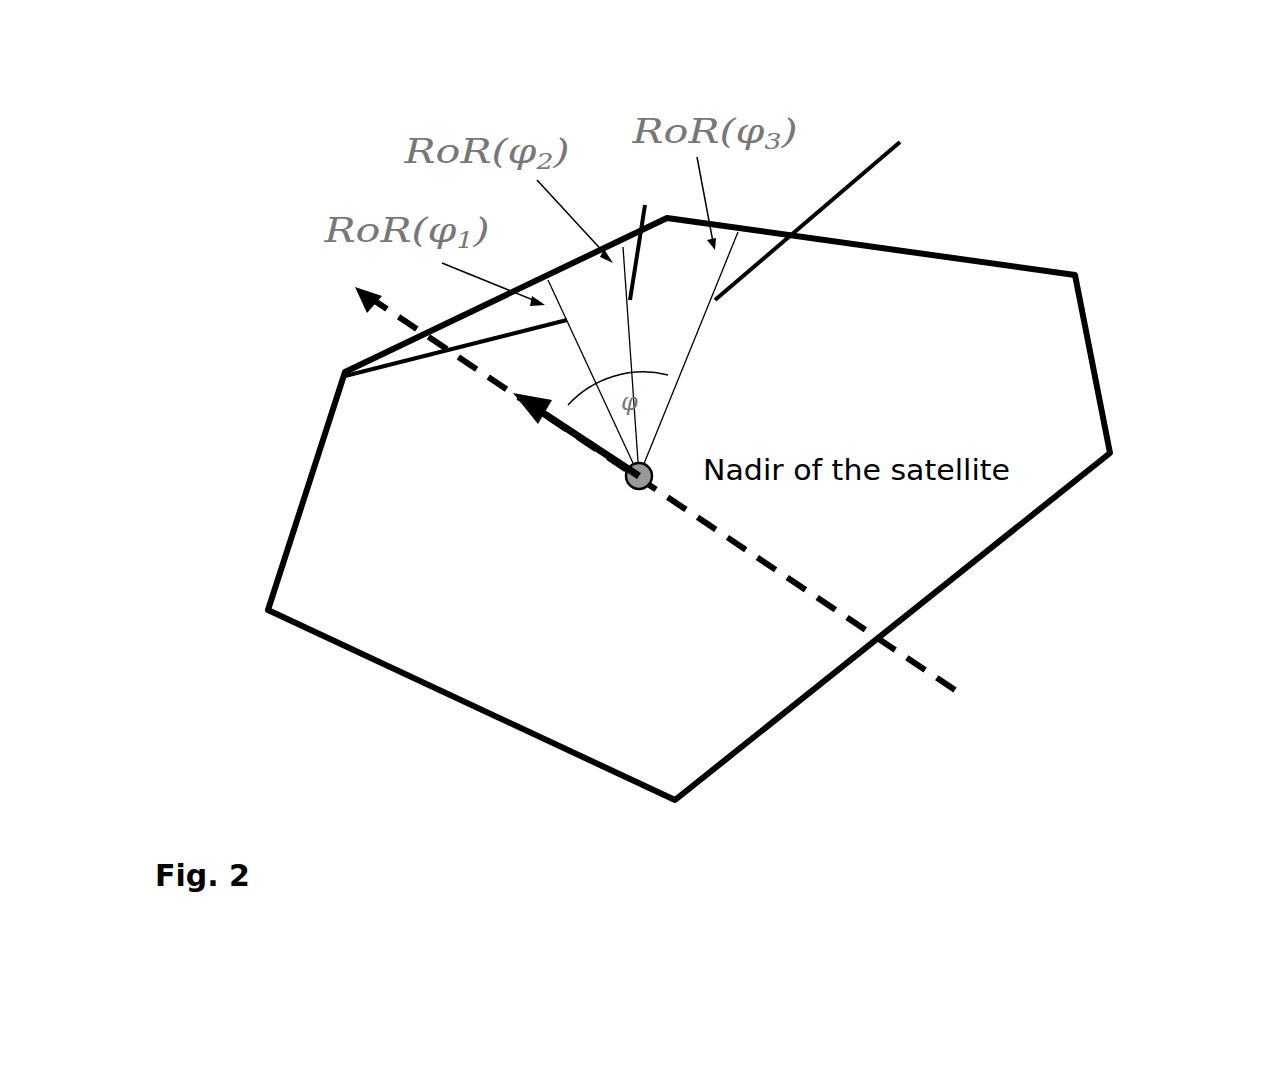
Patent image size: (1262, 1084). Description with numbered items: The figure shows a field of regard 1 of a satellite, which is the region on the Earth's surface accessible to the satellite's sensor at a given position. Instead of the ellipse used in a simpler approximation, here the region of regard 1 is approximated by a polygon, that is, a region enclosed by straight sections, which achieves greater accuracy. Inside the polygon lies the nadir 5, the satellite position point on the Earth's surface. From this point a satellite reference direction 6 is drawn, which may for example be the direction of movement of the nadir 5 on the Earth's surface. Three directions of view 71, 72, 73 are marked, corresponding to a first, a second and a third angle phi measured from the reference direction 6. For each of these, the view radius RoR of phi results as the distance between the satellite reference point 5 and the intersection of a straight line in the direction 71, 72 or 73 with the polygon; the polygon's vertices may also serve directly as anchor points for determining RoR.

The field of regard 1 is at (1097, 361).
The nadir 5 is at (633, 488).
The satellite reference direction 6 is at (555, 432).
The direction of view 71 is at (345, 376).
The direction of view 72 is at (649, 238).
The direction of view 73 is at (830, 208).